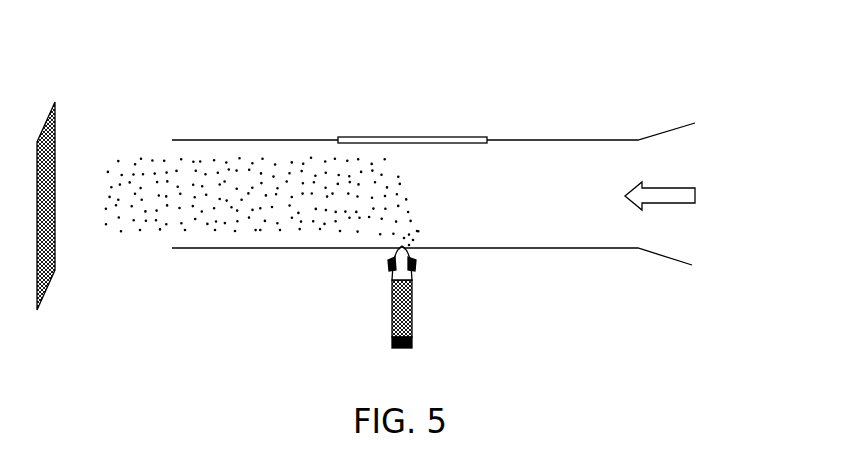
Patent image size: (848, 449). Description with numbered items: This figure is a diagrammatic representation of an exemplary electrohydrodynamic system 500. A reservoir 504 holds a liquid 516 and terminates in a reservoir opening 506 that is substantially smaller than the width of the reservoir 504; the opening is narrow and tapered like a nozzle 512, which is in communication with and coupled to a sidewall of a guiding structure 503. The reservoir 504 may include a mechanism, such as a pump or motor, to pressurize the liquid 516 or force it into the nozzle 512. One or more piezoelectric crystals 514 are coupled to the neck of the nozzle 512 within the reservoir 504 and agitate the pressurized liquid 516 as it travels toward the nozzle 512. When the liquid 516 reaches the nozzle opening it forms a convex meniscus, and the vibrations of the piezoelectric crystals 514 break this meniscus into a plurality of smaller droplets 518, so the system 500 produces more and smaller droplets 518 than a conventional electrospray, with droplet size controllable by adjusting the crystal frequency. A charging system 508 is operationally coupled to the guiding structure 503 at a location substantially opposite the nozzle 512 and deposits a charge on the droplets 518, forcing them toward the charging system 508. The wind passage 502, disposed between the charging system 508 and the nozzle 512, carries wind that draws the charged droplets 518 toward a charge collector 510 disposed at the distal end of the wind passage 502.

The EHD system 500 is at (481, 136).
The wind passage 502 is at (682, 158).
The guiding structure 503 is at (562, 140).
The reservoir 504 is at (412, 323).
The reservoir opening 506 is at (413, 273).
The charging system 508 is at (372, 136).
The charge collector 510 is at (55, 127).
The nozzle 512 is at (408, 250).
The piezoelectric crystals 514 is at (389, 263).
The liquid 516 is at (429, 307).
The droplets 518 is at (273, 220).